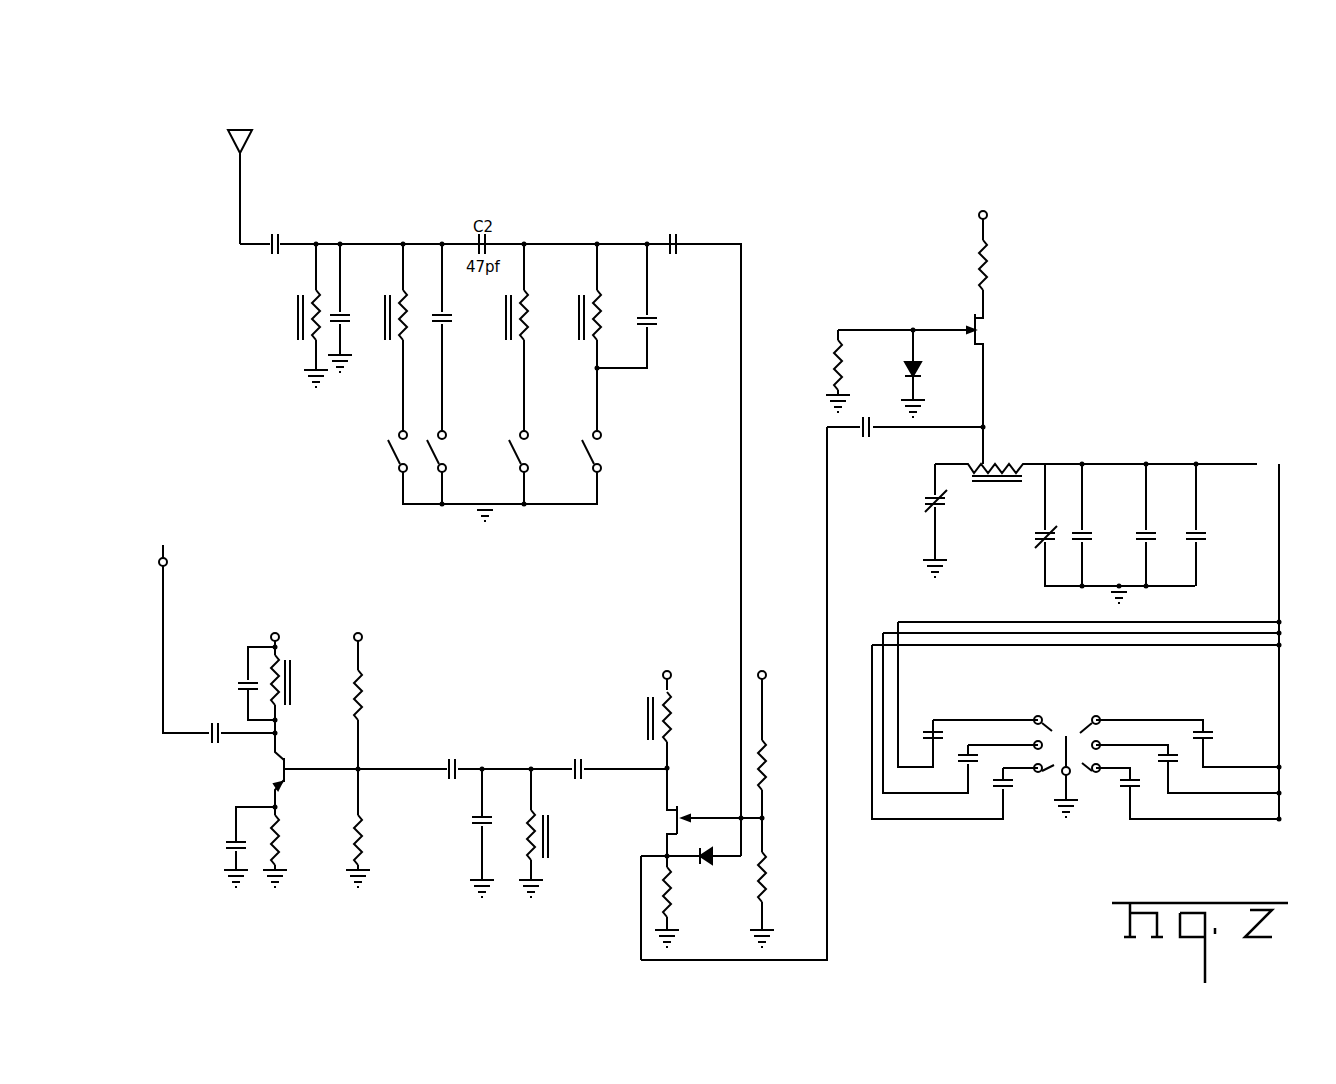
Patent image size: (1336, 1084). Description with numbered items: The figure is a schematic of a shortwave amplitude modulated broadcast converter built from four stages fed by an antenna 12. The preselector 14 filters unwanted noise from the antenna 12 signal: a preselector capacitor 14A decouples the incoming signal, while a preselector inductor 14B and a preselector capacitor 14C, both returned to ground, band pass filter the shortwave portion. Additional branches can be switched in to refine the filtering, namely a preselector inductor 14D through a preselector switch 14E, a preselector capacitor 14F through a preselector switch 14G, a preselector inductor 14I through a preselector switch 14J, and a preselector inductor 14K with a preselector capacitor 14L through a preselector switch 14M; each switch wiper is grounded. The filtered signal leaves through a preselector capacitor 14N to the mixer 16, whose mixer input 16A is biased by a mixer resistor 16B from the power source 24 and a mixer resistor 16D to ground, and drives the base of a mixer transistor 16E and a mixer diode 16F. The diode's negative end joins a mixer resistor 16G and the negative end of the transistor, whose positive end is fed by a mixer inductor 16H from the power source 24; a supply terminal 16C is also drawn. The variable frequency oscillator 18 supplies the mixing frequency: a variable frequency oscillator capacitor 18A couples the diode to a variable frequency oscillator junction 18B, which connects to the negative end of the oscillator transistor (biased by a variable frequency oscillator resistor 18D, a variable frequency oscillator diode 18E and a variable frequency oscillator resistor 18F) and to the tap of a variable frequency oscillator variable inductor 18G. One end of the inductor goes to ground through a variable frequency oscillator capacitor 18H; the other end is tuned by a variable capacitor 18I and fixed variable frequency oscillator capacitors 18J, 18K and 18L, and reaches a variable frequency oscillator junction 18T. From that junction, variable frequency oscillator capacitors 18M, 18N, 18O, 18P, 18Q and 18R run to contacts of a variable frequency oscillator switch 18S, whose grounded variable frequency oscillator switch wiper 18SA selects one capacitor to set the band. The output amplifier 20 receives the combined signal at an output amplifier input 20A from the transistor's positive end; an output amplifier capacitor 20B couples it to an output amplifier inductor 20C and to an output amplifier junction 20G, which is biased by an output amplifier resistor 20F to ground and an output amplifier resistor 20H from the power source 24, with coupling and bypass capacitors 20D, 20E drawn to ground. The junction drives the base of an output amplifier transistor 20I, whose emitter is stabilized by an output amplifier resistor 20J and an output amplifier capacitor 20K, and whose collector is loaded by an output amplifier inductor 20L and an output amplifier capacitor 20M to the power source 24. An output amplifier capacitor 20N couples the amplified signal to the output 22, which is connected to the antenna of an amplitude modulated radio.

The antenna 12 is at (240, 130).
The preselector 14 is at (522, 118).
The preselector capacitor C1 14A is at (285, 240).
The preselector inductor L1 14B is at (295, 335).
The preselector capacitor C4 14C is at (343, 323).
The preselector inductor L2 14D is at (385, 265).
The preselector switch SW1 14E is at (390, 447).
The preselector capacitor C5 14F is at (448, 325).
The preselector switch SW2 14G is at (442, 452).
The preselector inductor L3 14I is at (528, 312).
The preselector switch SW3 14J is at (522, 452).
The preselector inductor L4 14K is at (603, 312).
The preselector capacitor C6 14L is at (648, 330).
The preselector switch SW4 14M is at (600, 450).
The preselector capacitor C3 14N is at (676, 215).
The mixer 16 is at (720, 625).
The mixer input 16A is at (742, 817).
The mixer resistor R3 16B is at (770, 760).
The VCC supply terminal 16C is at (763, 660).
The mixer resistor R4 16D is at (765, 900).
The mixer transistor Q2 16E is at (707, 777).
The mixer diode D2 16F is at (708, 868).
The mixer resistor R5 16G is at (670, 912).
The mixer inductor L6 16H is at (645, 705).
The variable frequency oscillator 18 is at (1192, 368).
The variable frequency oscillator capacitor C18 18A is at (860, 425).
The variable frequency oscillator junction 18B is at (988, 420).
The variable frequency oscillator resistor R1 18D is at (1005, 262).
The variable frequency oscillator diode D1 18E is at (912, 322).
The variable frequency oscillator resistor R2 18F is at (835, 355).
The variable frequency oscillator variable inductor L5 18G is at (1010, 462).
The variable frequency oscillator capacitor C11 18H is at (928, 497).
The variable capacitor C7 18I is at (1042, 538).
The variable frequency oscillator capacitor C8 18J is at (1078, 543).
The variable frequency oscillator capacitor C9 18K is at (1153, 542).
The variable frequency oscillator capacitor C10 18L is at (1040, 318).
The variable frequency oscillator capacitor C12 18M is at (925, 728).
The variable frequency oscillator capacitor C13 18N is at (957, 750).
The variable frequency oscillator capacitor C14 18O is at (1000, 770).
The variable frequency oscillator capacitor C15 18P is at (1218, 728).
The variable frequency oscillator capacitor C16 18Q is at (1172, 750).
The variable frequency oscillator capacitor C17 18R is at (1140, 775).
The variable frequency oscillator switch SW5 18S is at (1070, 730).
The variable frequency oscillator switch wiper 18SA is at (1063, 745).
The variable frequency oscillator junction 18T is at (1288, 612).
The output amplifier 20 is at (519, 617).
The output amplifier input 20A is at (665, 775).
The output amplifier capacitor C19 20B is at (575, 757).
The output amplifier inductor L7 20C is at (553, 845).
The capacitor C20 20D is at (495, 827).
The capacitor C21 20E is at (455, 755).
The output amplifier resistor R7 20F is at (365, 835).
The output amplifier junction 20G is at (358, 769).
The output amplifier resistor R6 20H is at (365, 700).
The output amplifier transistor Q3 20I is at (292, 765).
The output amplifier resistor R8 20J is at (280, 848).
The output amplifier capacitor C24 20K is at (228, 850).
The output amplifier inductor L8 20L is at (300, 658).
The output amplifier capacitor C22 20M is at (238, 688).
The output amplifier capacitor C23 20N is at (210, 737).
The output 22 is at (177, 612).
The power source 24 is at (978, 190).